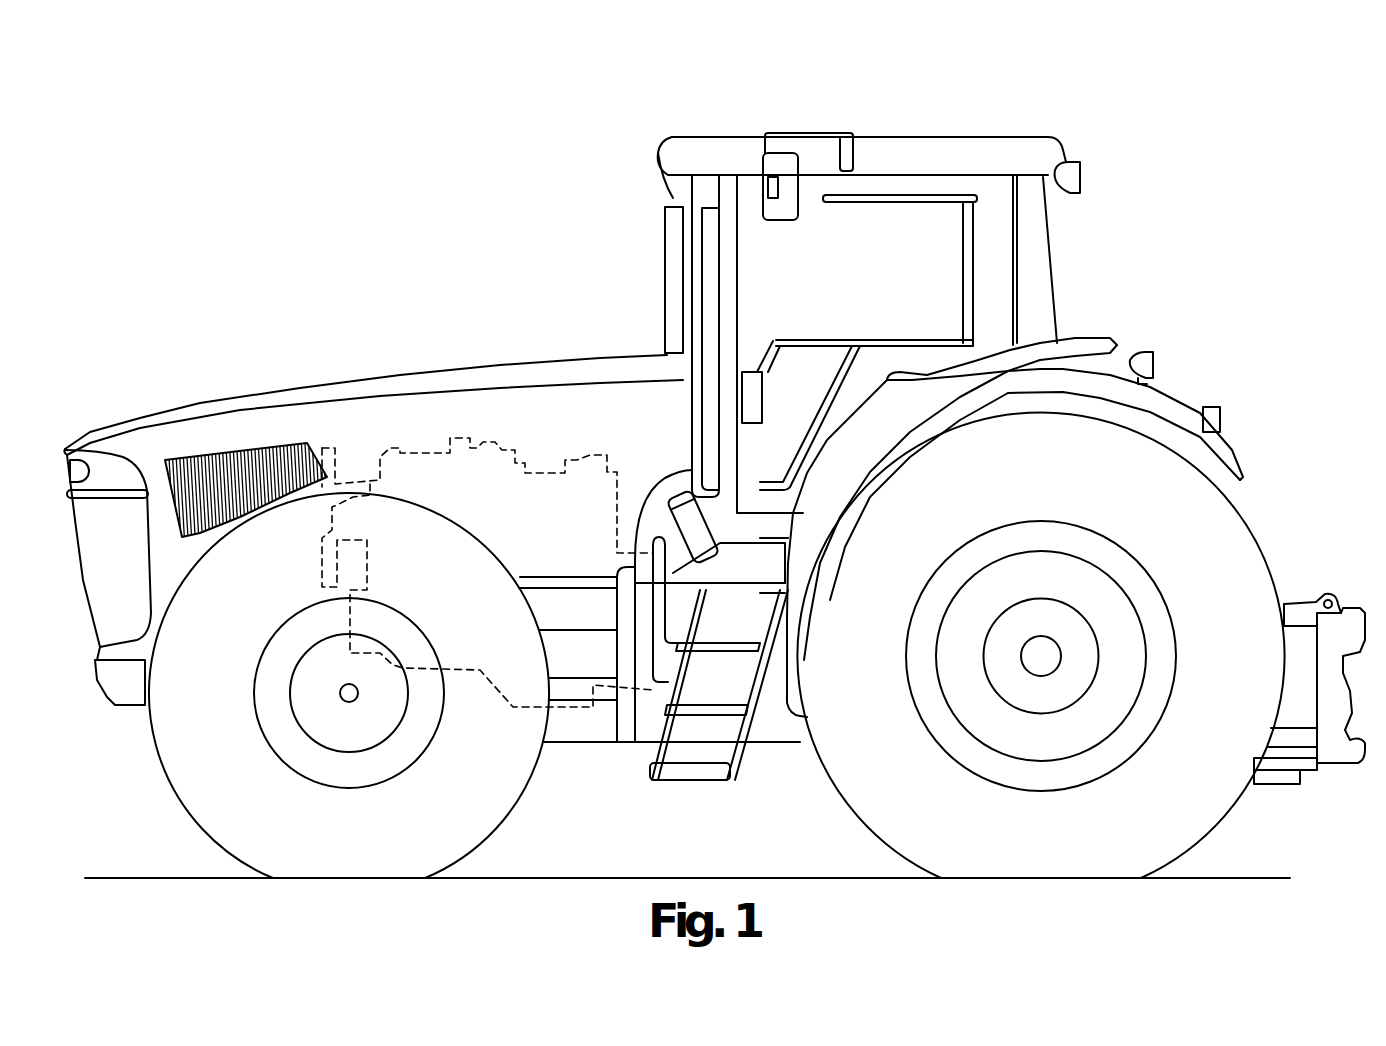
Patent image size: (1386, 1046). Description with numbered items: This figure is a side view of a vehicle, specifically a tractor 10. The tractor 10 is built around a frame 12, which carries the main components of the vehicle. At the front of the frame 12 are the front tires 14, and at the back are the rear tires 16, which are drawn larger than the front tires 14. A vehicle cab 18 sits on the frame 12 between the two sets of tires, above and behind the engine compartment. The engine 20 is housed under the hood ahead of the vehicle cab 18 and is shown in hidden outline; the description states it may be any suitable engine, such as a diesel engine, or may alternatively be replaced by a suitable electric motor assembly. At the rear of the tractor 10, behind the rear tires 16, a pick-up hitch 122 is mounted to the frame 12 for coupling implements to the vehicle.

The tractor 10 is at (1124, 136).
The frame 12 is at (585, 663).
The front tires 14 is at (160, 777).
The rear tires 16 is at (845, 800).
The vehicle cab 18 is at (1060, 266).
The engine 20 is at (462, 437).
The hitch assembly 122 is at (1315, 770).